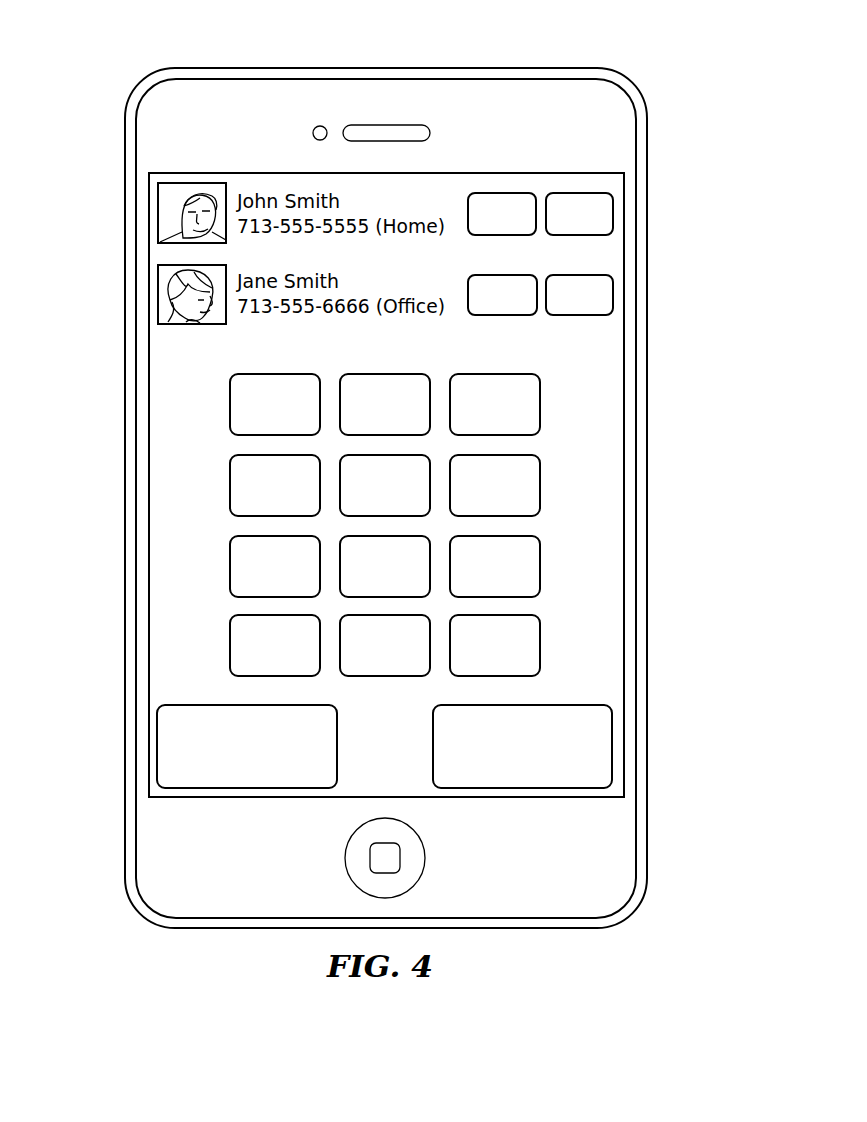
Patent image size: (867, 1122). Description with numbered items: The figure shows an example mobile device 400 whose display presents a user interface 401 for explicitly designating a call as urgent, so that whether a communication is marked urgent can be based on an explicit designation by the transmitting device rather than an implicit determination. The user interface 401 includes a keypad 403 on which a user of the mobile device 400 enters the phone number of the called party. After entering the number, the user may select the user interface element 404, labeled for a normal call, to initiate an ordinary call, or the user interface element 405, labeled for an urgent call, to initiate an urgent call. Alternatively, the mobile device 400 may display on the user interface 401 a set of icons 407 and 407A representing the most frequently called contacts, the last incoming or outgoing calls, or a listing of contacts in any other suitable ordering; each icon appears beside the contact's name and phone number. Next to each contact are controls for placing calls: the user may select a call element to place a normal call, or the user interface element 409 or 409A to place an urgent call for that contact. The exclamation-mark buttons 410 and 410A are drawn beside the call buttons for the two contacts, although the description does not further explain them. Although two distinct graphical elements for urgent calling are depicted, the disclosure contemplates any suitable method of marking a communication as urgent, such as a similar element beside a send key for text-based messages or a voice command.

The mobile device 400 is at (466, 49).
The user interface 401 is at (160, 535).
The keypad 403 is at (232, 405).
The user interface element 404 is at (165, 745).
The user interface element 405 is at (602, 748).
The icon 407 is at (165, 210).
The icon 407A is at (165, 288).
The user interface element 409 is at (500, 193).
The user interface element 409A is at (503, 315).
The urgent call indicator button for first contact 410 is at (603, 213).
The urgent call indicator button for second contact 410A is at (605, 295).